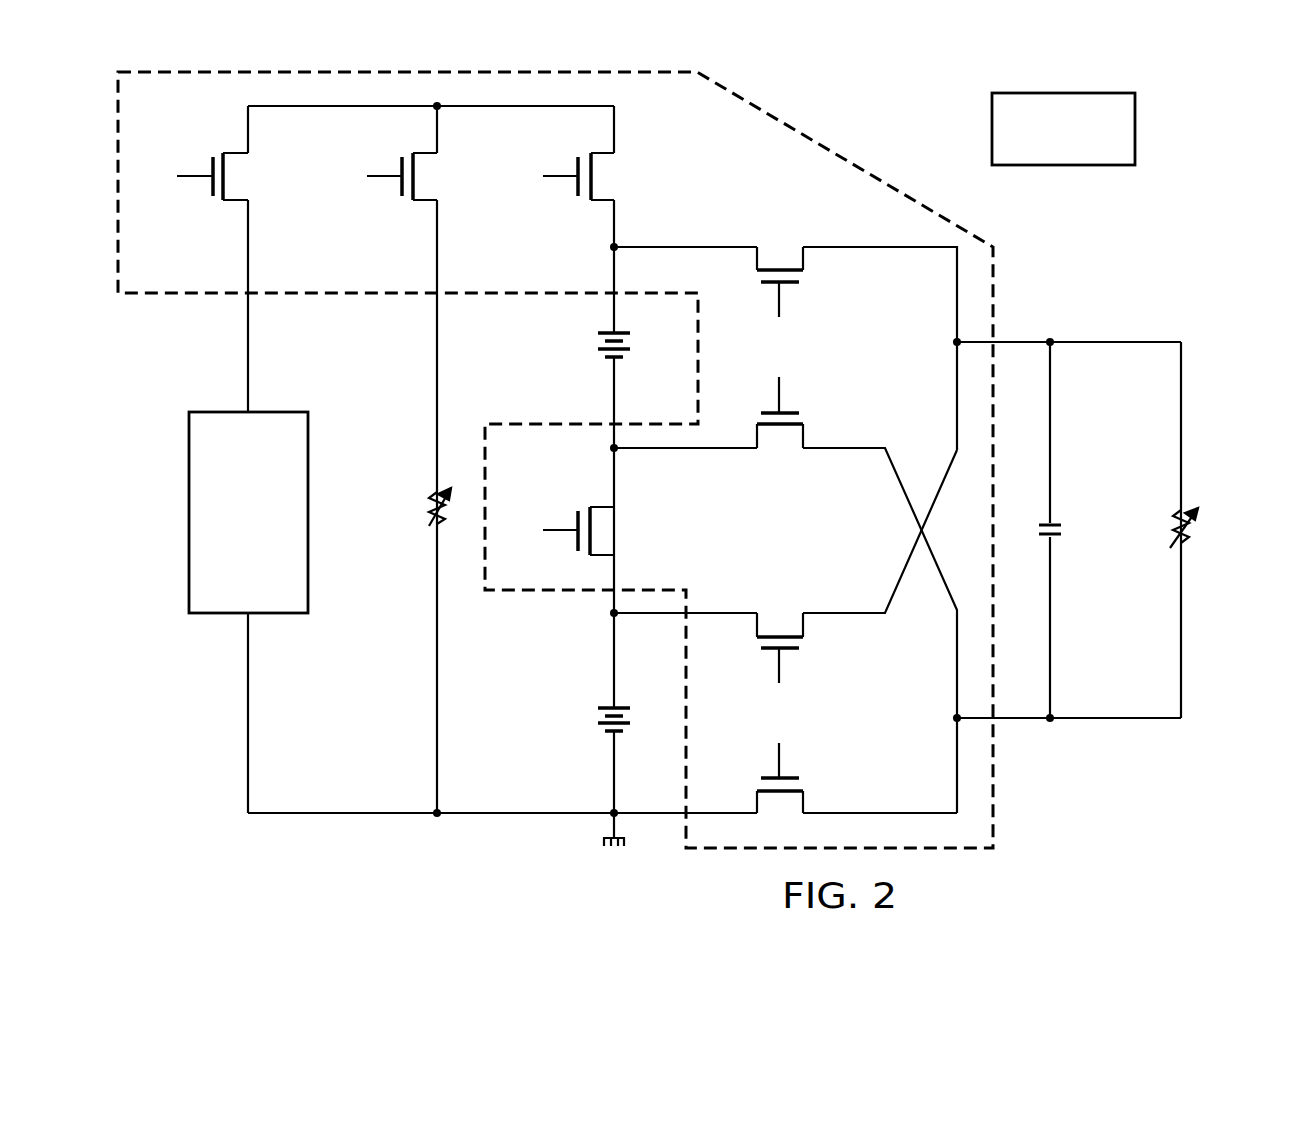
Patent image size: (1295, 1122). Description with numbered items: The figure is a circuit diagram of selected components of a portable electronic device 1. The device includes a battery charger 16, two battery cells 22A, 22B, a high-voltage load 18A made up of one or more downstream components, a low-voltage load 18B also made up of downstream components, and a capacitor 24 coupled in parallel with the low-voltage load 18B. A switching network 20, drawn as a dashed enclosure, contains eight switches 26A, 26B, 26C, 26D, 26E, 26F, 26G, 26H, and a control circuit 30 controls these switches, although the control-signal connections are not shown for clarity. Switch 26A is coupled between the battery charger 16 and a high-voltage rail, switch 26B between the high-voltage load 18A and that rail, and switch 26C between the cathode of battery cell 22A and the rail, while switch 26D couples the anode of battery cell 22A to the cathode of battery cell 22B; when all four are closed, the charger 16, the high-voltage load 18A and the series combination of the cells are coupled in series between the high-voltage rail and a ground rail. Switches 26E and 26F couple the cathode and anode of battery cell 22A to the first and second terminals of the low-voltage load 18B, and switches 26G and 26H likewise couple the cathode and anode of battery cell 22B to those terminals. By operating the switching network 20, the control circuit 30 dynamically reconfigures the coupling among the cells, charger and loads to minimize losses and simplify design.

The portable electronic device 1 is at (1232, 218).
The battery charger 16 is at (232, 568).
The high-voltage load 18A is at (432, 505).
The low-voltage load 18B is at (1190, 538).
The switching network 20 is at (993, 790).
The battery cell 22A is at (592, 348).
The battery cell 22B is at (592, 722).
The capacitor 24 is at (1063, 528).
The switch 26A is at (210, 162).
The switch 26B is at (400, 165).
The switch 26C is at (576, 165).
The switch 26D is at (575, 542).
The switch 26E is at (768, 285).
The switch 26F is at (792, 410).
The switch 26G is at (762, 652).
The switch 26H is at (795, 775).
The control circuit 30 is at (1063, 93).